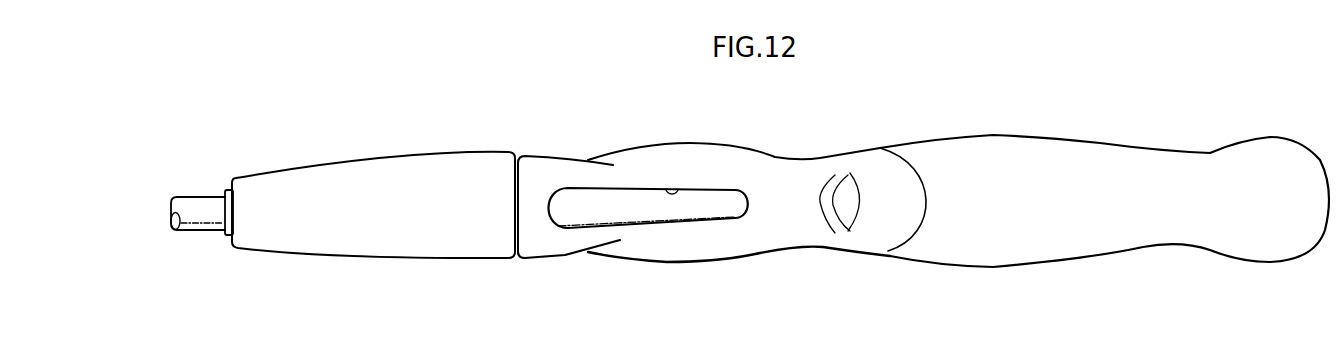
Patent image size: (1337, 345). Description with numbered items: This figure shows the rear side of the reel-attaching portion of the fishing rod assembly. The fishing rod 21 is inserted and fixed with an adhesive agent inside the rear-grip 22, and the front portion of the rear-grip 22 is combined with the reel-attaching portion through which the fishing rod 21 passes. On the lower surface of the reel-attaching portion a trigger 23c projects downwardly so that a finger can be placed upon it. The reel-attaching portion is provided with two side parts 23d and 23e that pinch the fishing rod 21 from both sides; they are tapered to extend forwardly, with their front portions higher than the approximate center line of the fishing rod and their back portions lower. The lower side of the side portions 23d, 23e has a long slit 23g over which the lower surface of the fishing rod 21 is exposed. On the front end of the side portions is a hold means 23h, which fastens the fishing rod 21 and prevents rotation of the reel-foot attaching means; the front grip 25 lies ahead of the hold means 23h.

The fishing rod 21 is at (194, 190).
The rear-grip 22 is at (1038, 142).
The body 25 is at (397, 165).
The hold means 23h is at (530, 156).
The side part 23d is at (722, 146).
The side part 23e is at (683, 263).
The long slit 23g is at (667, 189).
The trigger 23c is at (818, 195).